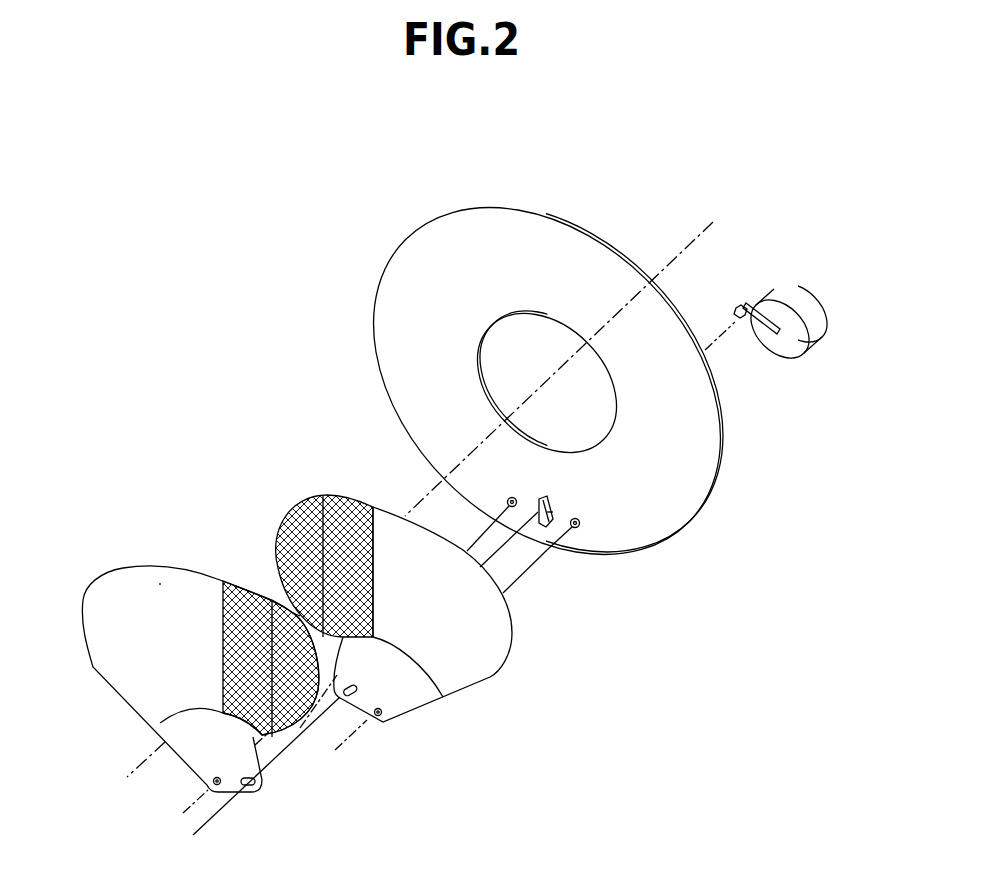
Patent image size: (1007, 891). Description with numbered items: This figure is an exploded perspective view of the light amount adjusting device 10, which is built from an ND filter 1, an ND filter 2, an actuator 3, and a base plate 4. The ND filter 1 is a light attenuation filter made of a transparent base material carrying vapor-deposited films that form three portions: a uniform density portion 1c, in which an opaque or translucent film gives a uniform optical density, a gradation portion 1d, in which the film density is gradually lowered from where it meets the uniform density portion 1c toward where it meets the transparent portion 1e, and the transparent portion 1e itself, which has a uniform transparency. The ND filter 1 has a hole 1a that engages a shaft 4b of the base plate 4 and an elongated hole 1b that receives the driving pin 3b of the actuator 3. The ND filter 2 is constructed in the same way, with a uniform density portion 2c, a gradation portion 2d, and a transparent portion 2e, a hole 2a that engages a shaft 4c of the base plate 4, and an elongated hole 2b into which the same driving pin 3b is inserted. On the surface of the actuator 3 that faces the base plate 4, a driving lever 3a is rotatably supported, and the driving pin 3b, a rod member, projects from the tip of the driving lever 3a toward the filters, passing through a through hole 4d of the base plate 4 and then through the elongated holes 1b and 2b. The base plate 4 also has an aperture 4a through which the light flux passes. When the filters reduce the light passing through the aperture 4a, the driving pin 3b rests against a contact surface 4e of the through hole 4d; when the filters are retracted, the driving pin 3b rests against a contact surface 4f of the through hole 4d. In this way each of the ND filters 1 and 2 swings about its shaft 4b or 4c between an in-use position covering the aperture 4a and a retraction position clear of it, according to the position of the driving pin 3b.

The light amount adjusting device 10 is at (306, 168).
The ND filter 1 is at (123, 677).
The hole 1a is at (209, 784).
The elongated hole 1b is at (247, 790).
The uniform density portion 1c is at (290, 738).
The gradation portion 1d is at (250, 597).
The transparent portion 1e is at (158, 590).
The ND filter 2 is at (483, 668).
The hole 2a is at (380, 718).
The elongated hole 2b is at (344, 698).
The uniform density portion 2c is at (303, 497).
The gradation portion 2d is at (340, 507).
The transparent portion 2e is at (392, 523).
The actuator 3 is at (790, 280).
The driving lever 3a is at (793, 312).
The driving pin 3b is at (743, 305).
The base plate 4 is at (510, 237).
The aperture 4a is at (573, 330).
The shaft 4b is at (509, 527).
The shaft 4c is at (578, 530).
The through hole 4d is at (555, 512).
The contact surface 4e is at (553, 505).
The contact surface 4f is at (548, 551).